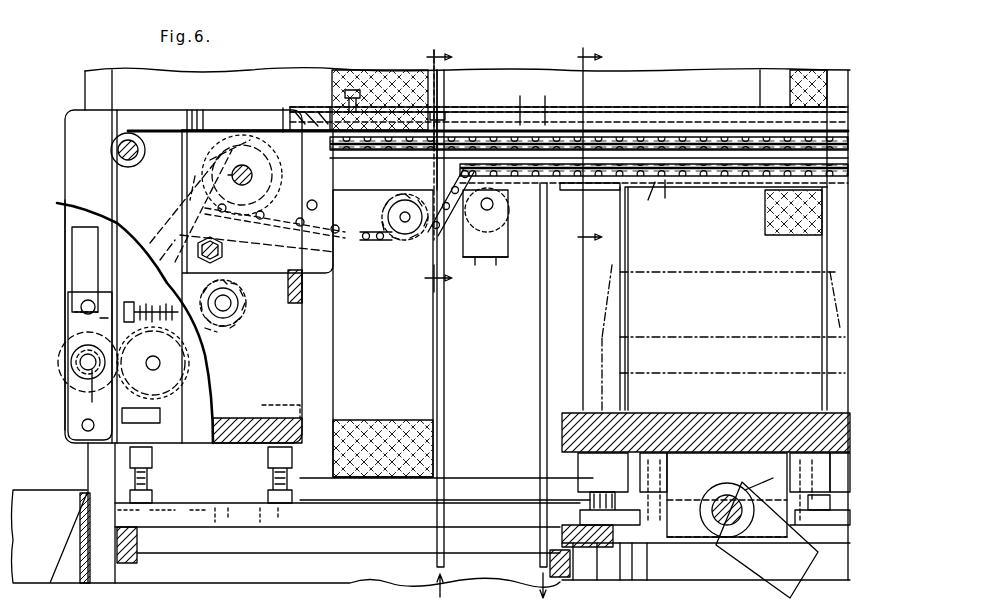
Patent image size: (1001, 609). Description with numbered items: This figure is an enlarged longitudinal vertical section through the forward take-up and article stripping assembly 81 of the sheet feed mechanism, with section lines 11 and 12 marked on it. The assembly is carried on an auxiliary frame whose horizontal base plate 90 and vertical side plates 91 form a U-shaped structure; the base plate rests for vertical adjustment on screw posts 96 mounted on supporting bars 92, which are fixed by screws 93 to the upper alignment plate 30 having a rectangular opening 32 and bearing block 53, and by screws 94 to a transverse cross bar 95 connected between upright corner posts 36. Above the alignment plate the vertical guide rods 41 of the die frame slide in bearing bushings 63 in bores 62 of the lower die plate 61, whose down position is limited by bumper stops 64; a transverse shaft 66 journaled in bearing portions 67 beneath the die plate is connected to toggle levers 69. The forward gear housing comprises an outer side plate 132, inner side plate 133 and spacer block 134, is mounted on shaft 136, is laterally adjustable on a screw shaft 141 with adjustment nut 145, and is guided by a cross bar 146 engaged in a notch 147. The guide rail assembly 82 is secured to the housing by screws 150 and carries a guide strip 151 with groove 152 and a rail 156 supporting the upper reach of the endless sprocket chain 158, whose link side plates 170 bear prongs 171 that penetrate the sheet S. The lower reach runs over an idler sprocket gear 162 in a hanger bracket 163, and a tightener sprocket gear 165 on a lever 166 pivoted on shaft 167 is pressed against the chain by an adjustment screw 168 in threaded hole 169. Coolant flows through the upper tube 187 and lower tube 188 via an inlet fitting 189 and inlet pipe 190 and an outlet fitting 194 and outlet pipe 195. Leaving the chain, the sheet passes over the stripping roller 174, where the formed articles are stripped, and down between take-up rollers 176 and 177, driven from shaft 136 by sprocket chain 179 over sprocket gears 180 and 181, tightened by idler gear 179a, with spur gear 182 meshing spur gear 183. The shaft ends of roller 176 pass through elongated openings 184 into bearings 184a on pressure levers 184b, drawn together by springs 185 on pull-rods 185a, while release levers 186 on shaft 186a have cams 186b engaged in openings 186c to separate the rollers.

The take-up and article stripping assembly 81 is at (58, 111).
The side plate 91 is at (66, 194).
The thermoplastic sheet S is at (110, 200).
The stripping roller 174 is at (113, 132).
The screws 150 is at (296, 108).
The outer rectangular side plate 132 is at (210, 116).
The guide strip 151 is at (660, 112).
The longitudinal groove 152 is at (680, 120).
The rail 156 is at (732, 190).
The endless sprocket chain 158 is at (726, 120).
The side plate of link 170 is at (615, 148).
The prongs 171 is at (586, 146).
The section line 11— 11 is at (426, 170).
The section line 12— 12 is at (577, 229).
The inlet fitting 189 is at (448, 130).
The adjustment screw 168 is at (352, 90).
The threaded hole 169 is at (380, 78).
The upper tube 187 is at (805, 80).
The sprocket chain carrier guide rail assembly 82 is at (775, 82).
The inner rectangular side plate 133 is at (182, 176).
The shaft 136 is at (252, 178).
The shaft 167 is at (310, 205).
The sprocket gear 180 is at (185, 194).
The sprocket chain 179 is at (170, 245).
The adjustment nut 145 is at (257, 245).
The screw shaft 141 is at (225, 255).
The notch 147 is at (251, 298).
The cross bar 146 is at (302, 312).
The spring 185 is at (153, 363).
The pull-rod 185a is at (145, 300).
The release lever 186 is at (72, 246).
The shaft 186a is at (80, 300).
The cam 186b is at (72, 306).
The opening 186c is at (98, 316).
The bearing 184a is at (75, 326).
The spur gear 183 is at (60, 360).
The take-up roller 176 is at (58, 380).
The elongated opening 184 is at (70, 405).
The pressure lever 184b is at (91, 392).
The take-up roller 177 is at (162, 411).
The base plate 90 is at (230, 418).
The idler gear 179a is at (242, 340).
The sprocket gear 181 is at (215, 368).
The spur gear 182 is at (205, 383).
The tightener sprocket gear 165 is at (428, 232).
The lever 166 is at (398, 245).
The idler sprocket gear 162 is at (500, 222).
The hanger bracket 163 is at (494, 263).
The spacer block 134 is at (338, 262).
The inlet pipe 190 is at (444, 328).
The outlet pipe 195 is at (540, 348).
The outlet fitting 194 is at (577, 190).
The vertical guide rod 41 is at (628, 310).
The lower tube 188 is at (777, 210).
The lower die plate 61 is at (722, 420).
The bore 62 is at (652, 425).
The bearing bushing 63 is at (688, 425).
The bumper stop 64 is at (840, 492).
The screws 93 is at (735, 486).
The transverse shaft 66 is at (738, 493).
The bearing portion 67 is at (692, 535).
The toggle lever 69 is at (775, 578).
The bearing block 53 is at (640, 567).
The upper alignment plate 30 is at (607, 560).
The rectangular opening 32 is at (625, 560).
The supporting bar 92 is at (238, 500).
The screws 94 is at (133, 512).
The transverse cross bar 95 is at (137, 560).
The upright corner post 36 is at (104, 580).
The screw post 96 is at (290, 472).